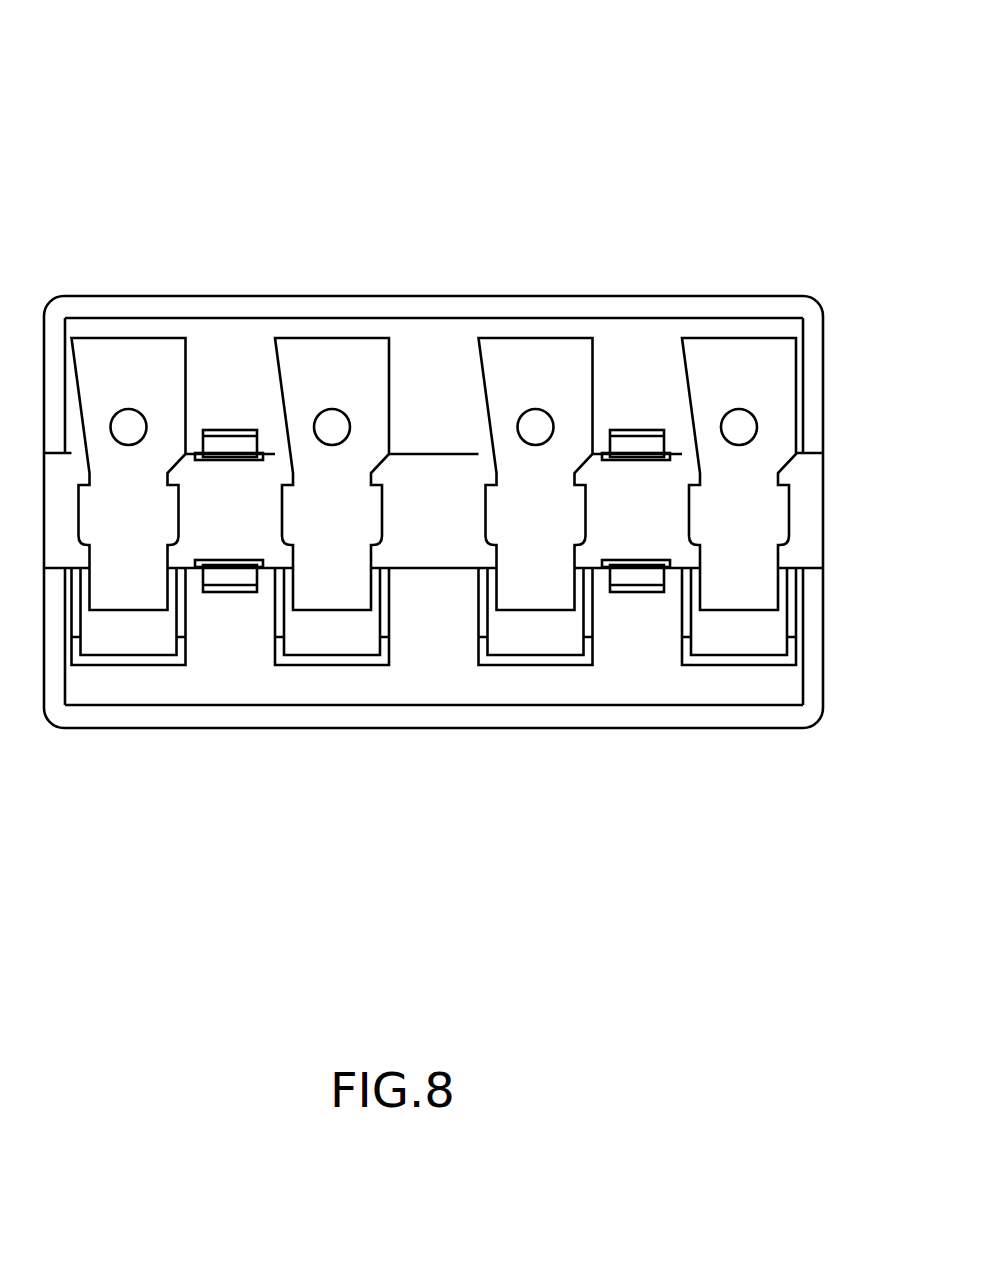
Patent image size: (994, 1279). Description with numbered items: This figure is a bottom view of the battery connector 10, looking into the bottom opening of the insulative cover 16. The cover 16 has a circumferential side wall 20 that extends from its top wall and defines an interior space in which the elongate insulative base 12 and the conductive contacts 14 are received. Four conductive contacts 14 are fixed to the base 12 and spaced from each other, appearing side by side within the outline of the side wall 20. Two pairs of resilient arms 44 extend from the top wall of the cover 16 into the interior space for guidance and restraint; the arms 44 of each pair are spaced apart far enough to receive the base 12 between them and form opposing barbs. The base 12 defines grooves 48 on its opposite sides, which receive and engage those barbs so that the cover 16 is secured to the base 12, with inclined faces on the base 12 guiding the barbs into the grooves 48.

The battery connector 10 is at (403, 138).
The insulative base 12 is at (773, 527).
The conductive contacts 14 is at (132, 365).
The insulative cover 16 is at (723, 295).
The circumferential side wall 20 is at (568, 308).
The resilient arms 44 is at (237, 578).
The grooves 48 is at (198, 565).